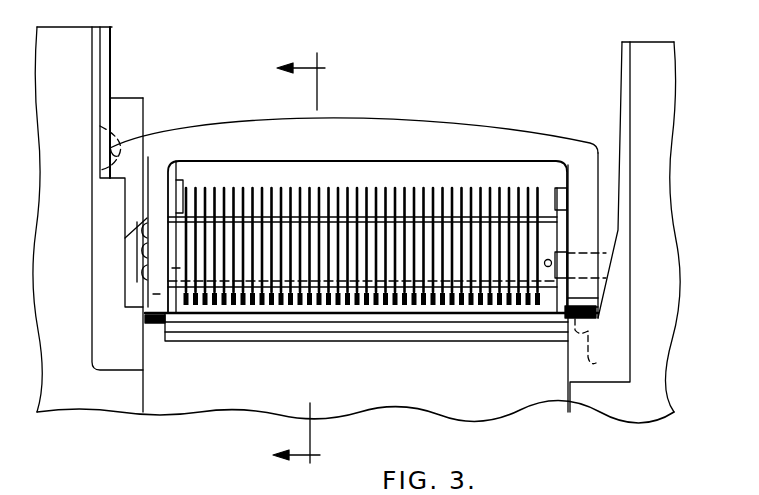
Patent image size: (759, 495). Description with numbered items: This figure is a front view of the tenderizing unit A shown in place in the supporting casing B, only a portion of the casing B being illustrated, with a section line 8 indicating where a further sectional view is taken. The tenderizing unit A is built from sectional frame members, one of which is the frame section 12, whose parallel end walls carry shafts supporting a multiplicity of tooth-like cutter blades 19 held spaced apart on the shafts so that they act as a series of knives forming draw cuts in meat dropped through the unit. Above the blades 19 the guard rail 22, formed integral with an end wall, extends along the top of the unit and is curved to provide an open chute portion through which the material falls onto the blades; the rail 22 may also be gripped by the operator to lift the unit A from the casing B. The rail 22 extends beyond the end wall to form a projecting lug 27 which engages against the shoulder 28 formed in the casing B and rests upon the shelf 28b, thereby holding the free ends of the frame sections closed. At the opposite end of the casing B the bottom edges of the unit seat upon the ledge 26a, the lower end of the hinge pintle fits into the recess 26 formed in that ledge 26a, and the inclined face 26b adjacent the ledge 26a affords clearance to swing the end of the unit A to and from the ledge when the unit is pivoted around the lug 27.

The section line 8- 8 is at (299, 262).
The frame section 12 is at (588, 146).
The cutter blades 19 is at (304, 193).
The guard rail 22 is at (392, 120).
The recess 26 is at (595, 348).
The ledge 26a is at (592, 321).
The inclined face 26b is at (616, 260).
The projecting lugs 27 is at (100, 126).
The shoulders 28 is at (137, 125).
The shelf 28b is at (127, 157).
The tenderizing unit A is at (497, 128).
The supporting casing B is at (662, 211).